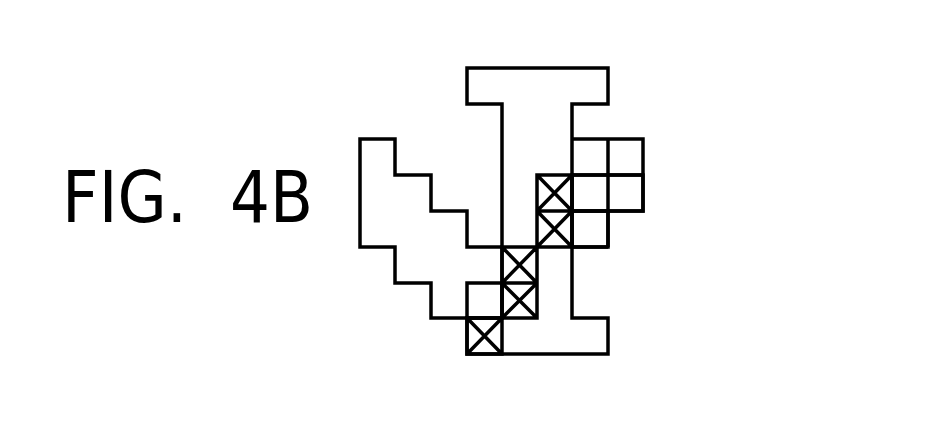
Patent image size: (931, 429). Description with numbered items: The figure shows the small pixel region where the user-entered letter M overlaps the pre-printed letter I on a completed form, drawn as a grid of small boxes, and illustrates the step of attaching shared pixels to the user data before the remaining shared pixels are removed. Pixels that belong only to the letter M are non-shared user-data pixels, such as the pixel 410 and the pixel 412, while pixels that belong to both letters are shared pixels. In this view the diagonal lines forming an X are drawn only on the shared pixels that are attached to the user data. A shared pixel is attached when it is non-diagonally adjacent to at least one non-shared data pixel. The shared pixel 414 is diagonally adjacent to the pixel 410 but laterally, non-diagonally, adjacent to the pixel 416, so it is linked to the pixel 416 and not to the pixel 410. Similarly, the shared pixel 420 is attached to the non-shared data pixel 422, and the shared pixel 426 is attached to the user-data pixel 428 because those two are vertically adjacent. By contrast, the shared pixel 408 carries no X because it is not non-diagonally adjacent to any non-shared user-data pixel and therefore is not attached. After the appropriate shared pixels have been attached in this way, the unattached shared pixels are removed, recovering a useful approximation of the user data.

The shared pixel 408 is at (567, 268).
The non-shared user data pixel 410 is at (592, 157).
The non-shared data pixel 412 is at (630, 160).
The shared pixel 414 is at (560, 175).
The non-shared data pixel 416 is at (593, 197).
The shared pixel 420 is at (545, 228).
The non-shared data pixel 422 is at (592, 225).
The shared pixel 426 is at (483, 350).
The user-data pixel 428 is at (477, 298).